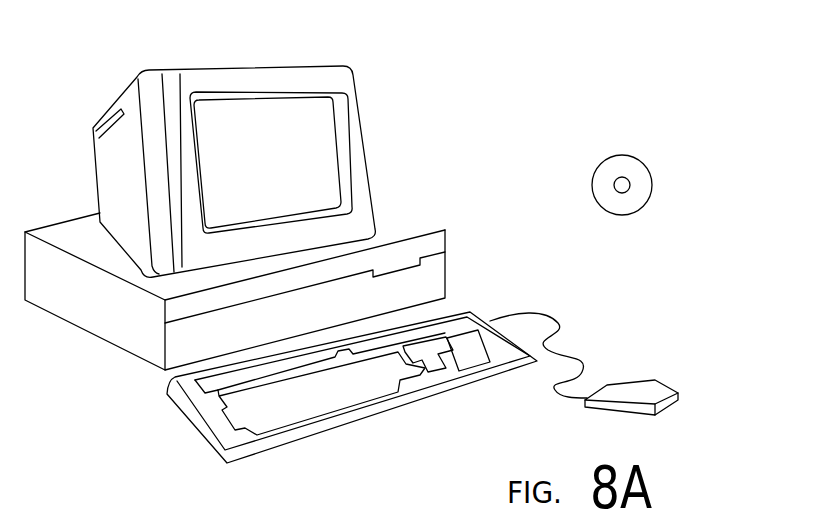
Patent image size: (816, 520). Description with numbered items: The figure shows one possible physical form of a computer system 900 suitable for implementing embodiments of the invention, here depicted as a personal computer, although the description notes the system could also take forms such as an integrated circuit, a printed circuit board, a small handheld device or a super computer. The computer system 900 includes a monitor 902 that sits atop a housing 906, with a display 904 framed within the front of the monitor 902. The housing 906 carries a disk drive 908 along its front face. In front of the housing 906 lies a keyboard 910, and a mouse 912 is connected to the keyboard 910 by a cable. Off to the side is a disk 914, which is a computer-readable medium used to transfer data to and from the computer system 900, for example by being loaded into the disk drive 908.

The computer system 900 is at (549, 46).
The monitor 902 is at (368, 167).
The display 904 is at (333, 120).
The housing 906 is at (130, 353).
The disk drive 908 is at (422, 257).
The keyboard 910 is at (353, 423).
The mouse 912 is at (670, 389).
The disk 914 is at (638, 157).